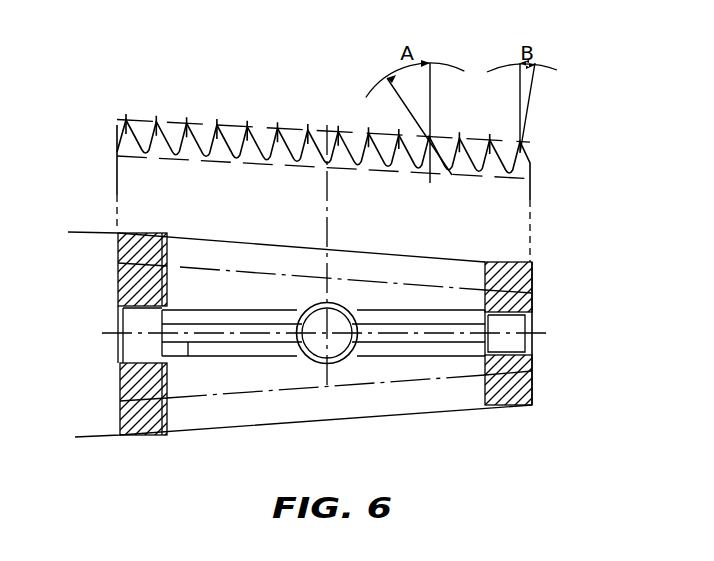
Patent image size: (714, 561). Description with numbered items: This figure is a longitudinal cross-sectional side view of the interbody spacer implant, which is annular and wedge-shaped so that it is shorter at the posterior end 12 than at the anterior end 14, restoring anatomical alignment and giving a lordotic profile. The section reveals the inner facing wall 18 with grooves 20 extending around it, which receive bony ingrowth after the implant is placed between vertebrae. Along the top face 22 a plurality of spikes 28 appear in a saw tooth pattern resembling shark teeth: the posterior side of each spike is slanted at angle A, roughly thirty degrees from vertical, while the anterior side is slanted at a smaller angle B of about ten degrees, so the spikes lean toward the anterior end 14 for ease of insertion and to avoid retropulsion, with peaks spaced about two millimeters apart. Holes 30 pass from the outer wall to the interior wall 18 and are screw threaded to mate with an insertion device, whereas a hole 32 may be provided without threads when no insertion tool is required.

The posterior end 12 is at (537, 281).
The anterior end 14 is at (116, 284).
The inner facing wall 18 is at (425, 398).
The grooves 20 is at (238, 352).
The top face 22 is at (312, 133).
The spikes or teeth 28 is at (234, 140).
The holes or apertures 30 is at (135, 348).
The hole 32 is at (515, 328).